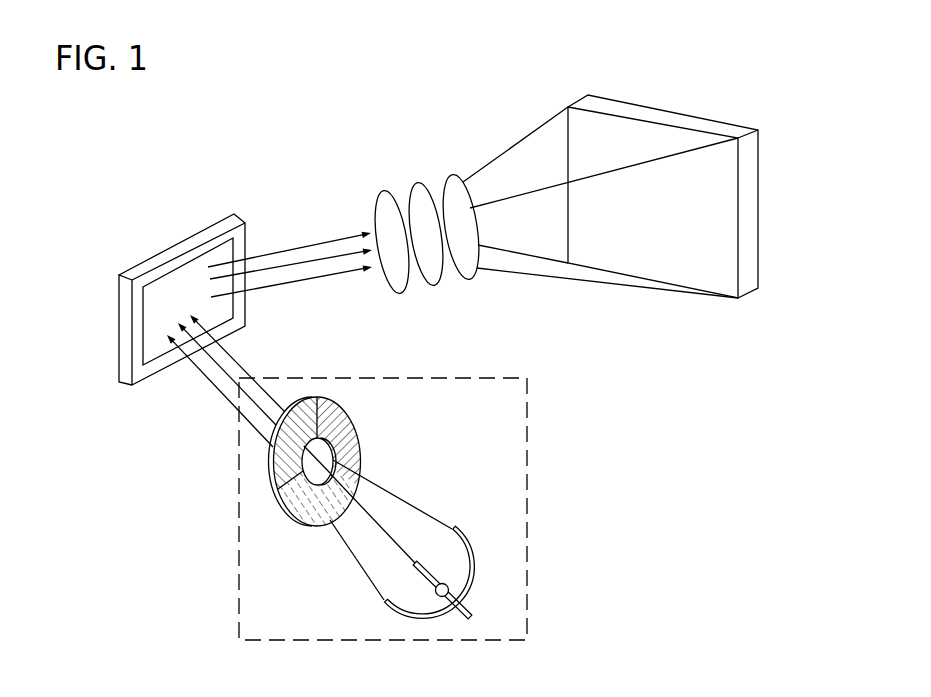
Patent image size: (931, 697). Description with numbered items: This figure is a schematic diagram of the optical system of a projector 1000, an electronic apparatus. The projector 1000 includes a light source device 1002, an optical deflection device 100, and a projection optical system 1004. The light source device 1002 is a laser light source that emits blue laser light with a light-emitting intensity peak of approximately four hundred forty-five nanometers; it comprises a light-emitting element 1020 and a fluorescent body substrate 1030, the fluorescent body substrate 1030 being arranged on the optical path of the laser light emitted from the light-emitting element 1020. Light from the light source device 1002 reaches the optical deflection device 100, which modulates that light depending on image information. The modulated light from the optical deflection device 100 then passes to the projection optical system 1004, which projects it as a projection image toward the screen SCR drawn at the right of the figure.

The projector 1000 is at (580, 23).
The optical deflection device 100 is at (190, 238).
The projection optical system 1004 is at (401, 168).
The screen SCR is at (748, 188).
The light source device 1002 is at (527, 403).
The fluorescent body substrate 1030 is at (275, 465).
The light-emitting element 1020 is at (473, 563).